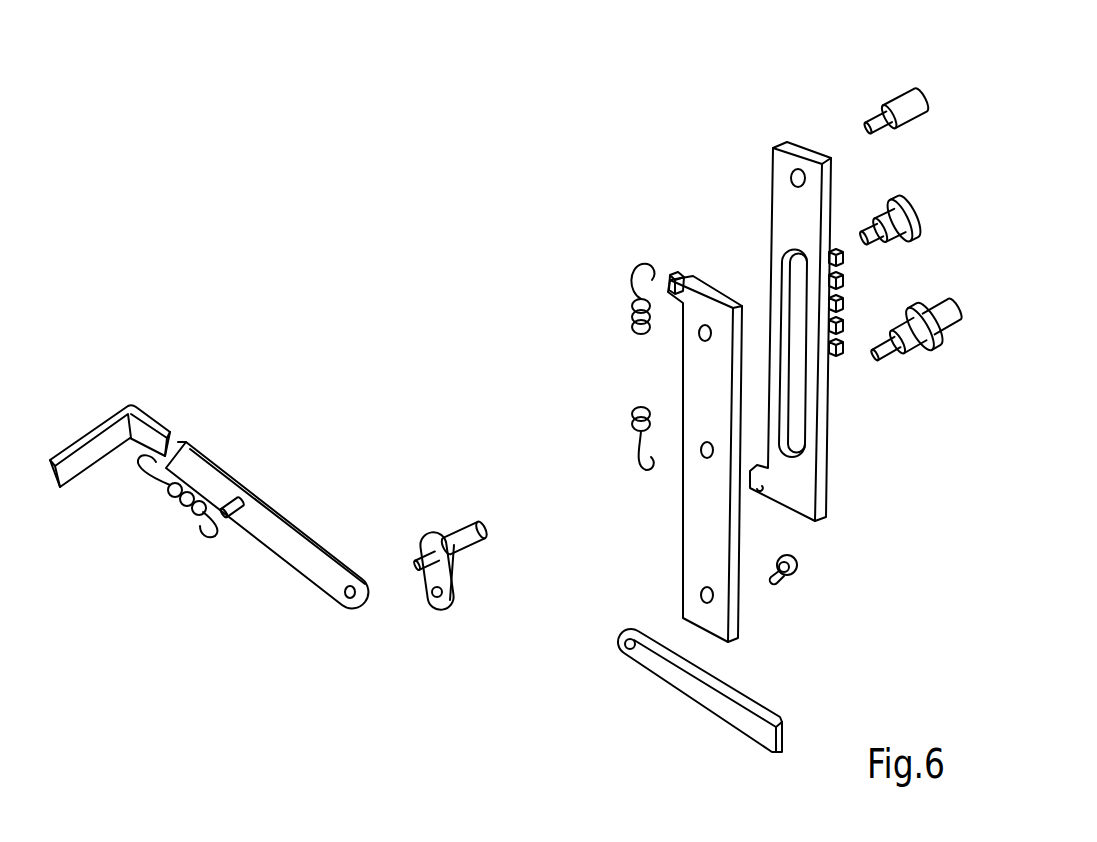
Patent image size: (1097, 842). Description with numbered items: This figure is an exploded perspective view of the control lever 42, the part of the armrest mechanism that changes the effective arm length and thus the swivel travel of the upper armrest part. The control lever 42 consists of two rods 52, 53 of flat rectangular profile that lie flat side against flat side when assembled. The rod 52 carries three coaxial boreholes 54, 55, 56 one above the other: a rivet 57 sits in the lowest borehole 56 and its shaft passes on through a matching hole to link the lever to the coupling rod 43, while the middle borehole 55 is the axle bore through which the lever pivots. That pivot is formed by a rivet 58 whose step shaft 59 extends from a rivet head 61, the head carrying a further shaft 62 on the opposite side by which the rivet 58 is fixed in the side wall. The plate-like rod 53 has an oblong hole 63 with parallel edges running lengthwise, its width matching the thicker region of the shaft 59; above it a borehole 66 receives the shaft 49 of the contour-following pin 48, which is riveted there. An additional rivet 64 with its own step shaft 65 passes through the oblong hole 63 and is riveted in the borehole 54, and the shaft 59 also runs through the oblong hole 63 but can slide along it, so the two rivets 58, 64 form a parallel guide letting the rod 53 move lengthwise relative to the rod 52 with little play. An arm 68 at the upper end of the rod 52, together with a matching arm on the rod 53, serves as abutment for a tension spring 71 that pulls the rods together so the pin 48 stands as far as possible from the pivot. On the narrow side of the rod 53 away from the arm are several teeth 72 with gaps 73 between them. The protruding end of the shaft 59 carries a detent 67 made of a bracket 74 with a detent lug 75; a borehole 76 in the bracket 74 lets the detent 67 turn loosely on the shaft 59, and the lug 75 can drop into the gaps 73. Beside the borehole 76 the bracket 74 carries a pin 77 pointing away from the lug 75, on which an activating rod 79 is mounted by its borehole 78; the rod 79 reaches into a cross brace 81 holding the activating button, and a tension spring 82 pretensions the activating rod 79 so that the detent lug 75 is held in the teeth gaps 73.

The control lever 42 is at (528, 325).
The coupling rod 43 is at (755, 718).
The contour-following pin 48 is at (908, 97).
The shaft of the pin 49 is at (870, 124).
The rod 52 is at (683, 531).
The rod 53 is at (830, 485).
The borehole 54 is at (699, 336).
The borehole 55 is at (702, 455).
The borehole 56 is at (701, 597).
The rivet 57 is at (792, 574).
The rivet 58 is at (934, 292).
The step shaft 59 is at (897, 352).
The rivet head 61 is at (930, 345).
The shaft 62 is at (958, 309).
The oblong hole 63 is at (781, 272).
The rivet 64 is at (931, 208).
The step shaft 65 is at (866, 207).
The borehole 66 is at (792, 175).
The detent 67 is at (448, 510).
The arm 68 is at (672, 278).
The tension spring 71 is at (632, 305).
The teeth 72 is at (844, 293).
The gaps 73 is at (842, 358).
The bracket 74 is at (425, 580).
The detent lug 75 is at (468, 548).
The borehole 76 is at (437, 597).
The pin 77 is at (418, 556).
The borehole 78 is at (348, 600).
The activating rod 79 is at (267, 561).
The cross brace 81 is at (80, 478).
The tension spring 82 is at (178, 500).